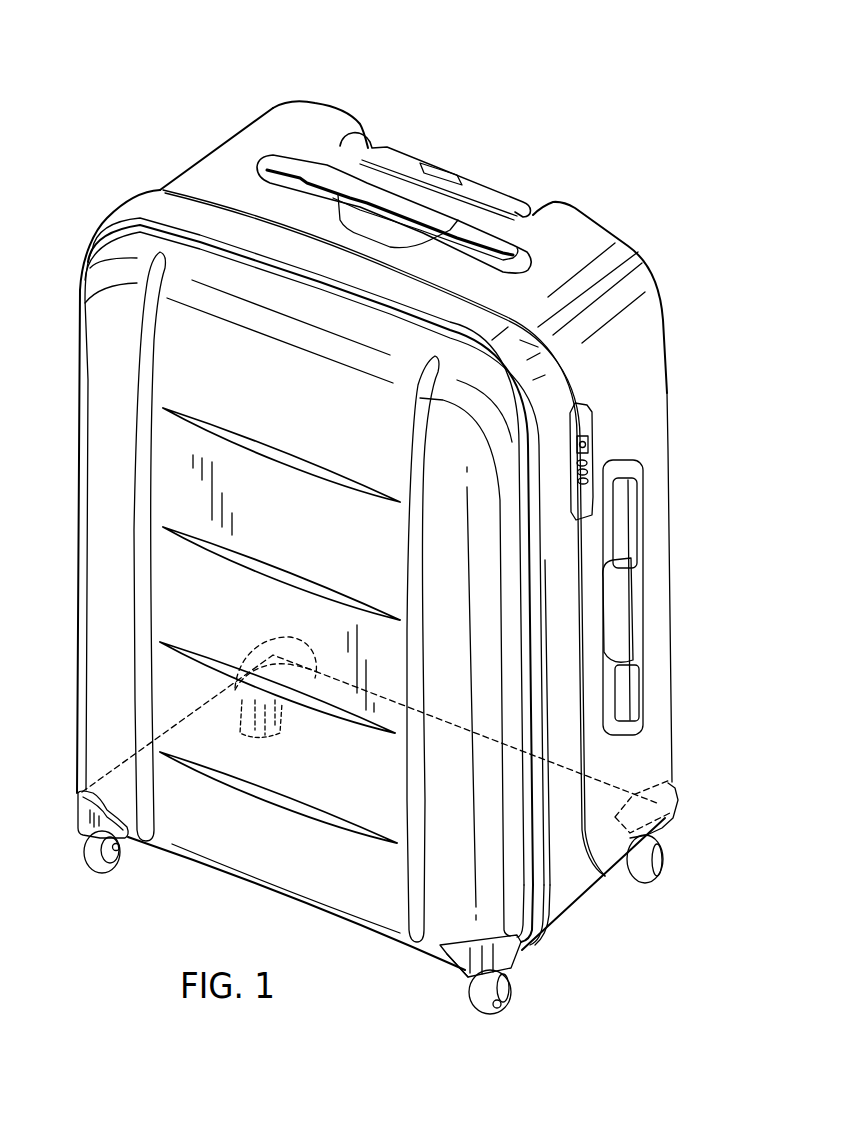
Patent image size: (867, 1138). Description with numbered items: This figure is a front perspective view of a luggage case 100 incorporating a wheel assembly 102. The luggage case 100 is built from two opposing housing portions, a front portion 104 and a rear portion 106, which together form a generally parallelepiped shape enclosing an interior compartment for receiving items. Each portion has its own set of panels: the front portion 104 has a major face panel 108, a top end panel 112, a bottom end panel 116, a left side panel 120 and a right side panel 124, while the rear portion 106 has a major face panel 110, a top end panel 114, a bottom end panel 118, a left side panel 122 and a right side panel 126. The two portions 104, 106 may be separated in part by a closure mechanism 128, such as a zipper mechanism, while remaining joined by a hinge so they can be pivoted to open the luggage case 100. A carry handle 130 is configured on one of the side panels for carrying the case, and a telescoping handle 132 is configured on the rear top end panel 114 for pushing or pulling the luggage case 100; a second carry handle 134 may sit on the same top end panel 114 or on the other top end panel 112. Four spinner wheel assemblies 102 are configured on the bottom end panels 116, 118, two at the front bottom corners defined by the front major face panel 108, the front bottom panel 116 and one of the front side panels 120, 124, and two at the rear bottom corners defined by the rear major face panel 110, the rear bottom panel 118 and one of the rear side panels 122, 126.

The luggage case 100 is at (548, 60).
The wheel assembly 102 is at (477, 974).
The front portion 104 is at (73, 524).
The rear portion 106 is at (232, 120).
The major face panel 108 is at (123, 483).
The major face panel 110 is at (667, 385).
The top end panel 112 is at (217, 272).
The top end panel 114 is at (303, 120).
The bottom end panel 116 is at (262, 893).
The bottom end panel 118 is at (610, 878).
The left side panel 120 is at (75, 630).
The left side panel 122 is at (187, 165).
The right side panel 124 is at (537, 902).
The right side panel 126 is at (650, 756).
The closure mechanism 128 is at (148, 208).
The carry handle 130 is at (635, 605).
The telescoping handle 132 is at (485, 190).
The carry handle 134 is at (390, 195).